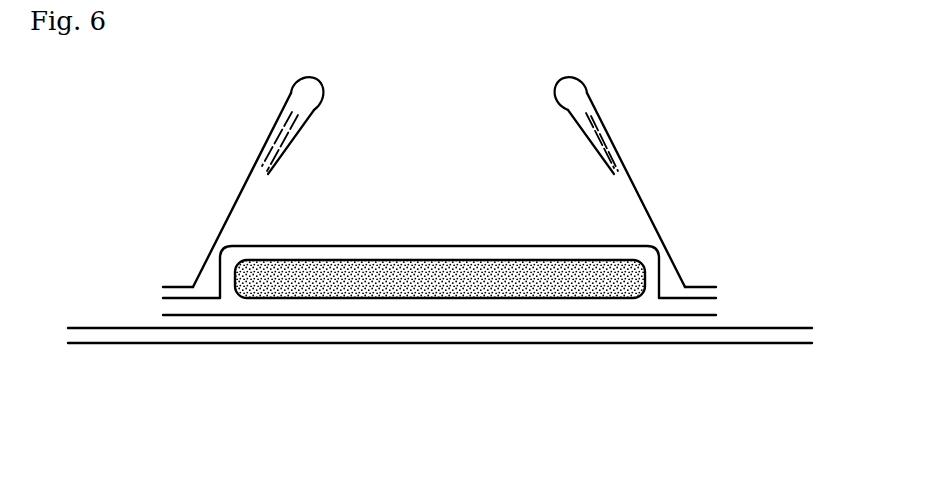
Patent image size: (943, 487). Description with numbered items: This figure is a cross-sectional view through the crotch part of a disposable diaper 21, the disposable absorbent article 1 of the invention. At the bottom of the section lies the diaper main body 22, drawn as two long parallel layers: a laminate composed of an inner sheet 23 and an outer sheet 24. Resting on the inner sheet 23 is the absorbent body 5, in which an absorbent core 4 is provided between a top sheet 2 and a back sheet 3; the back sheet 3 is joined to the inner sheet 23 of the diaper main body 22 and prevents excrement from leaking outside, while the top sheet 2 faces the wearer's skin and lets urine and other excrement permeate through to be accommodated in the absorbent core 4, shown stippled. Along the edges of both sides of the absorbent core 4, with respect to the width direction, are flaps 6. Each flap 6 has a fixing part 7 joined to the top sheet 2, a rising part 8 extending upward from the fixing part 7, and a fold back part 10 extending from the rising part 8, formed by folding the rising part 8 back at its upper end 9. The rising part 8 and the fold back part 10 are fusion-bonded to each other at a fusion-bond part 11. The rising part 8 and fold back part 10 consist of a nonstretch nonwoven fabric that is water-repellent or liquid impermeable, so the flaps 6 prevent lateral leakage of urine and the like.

The absorbent article 1 is at (479, 226).
The disposable diaper 21 is at (678, 173).
The top sheet 2 is at (482, 245).
The back sheet 3 is at (497, 313).
The absorbent core 4 is at (360, 285).
The absorbent body 5 is at (353, 245).
The flap 6 is at (449, 128).
The fixing part 7 is at (192, 286).
The rising part 8 is at (235, 203).
The upper end 9 is at (317, 82).
The fold back part 10 is at (290, 132).
The fusion-bond part 11 is at (280, 163).
The diaper main body 22 is at (440, 332).
The inner sheet 23 is at (142, 328).
The outer sheet 24 is at (160, 344).